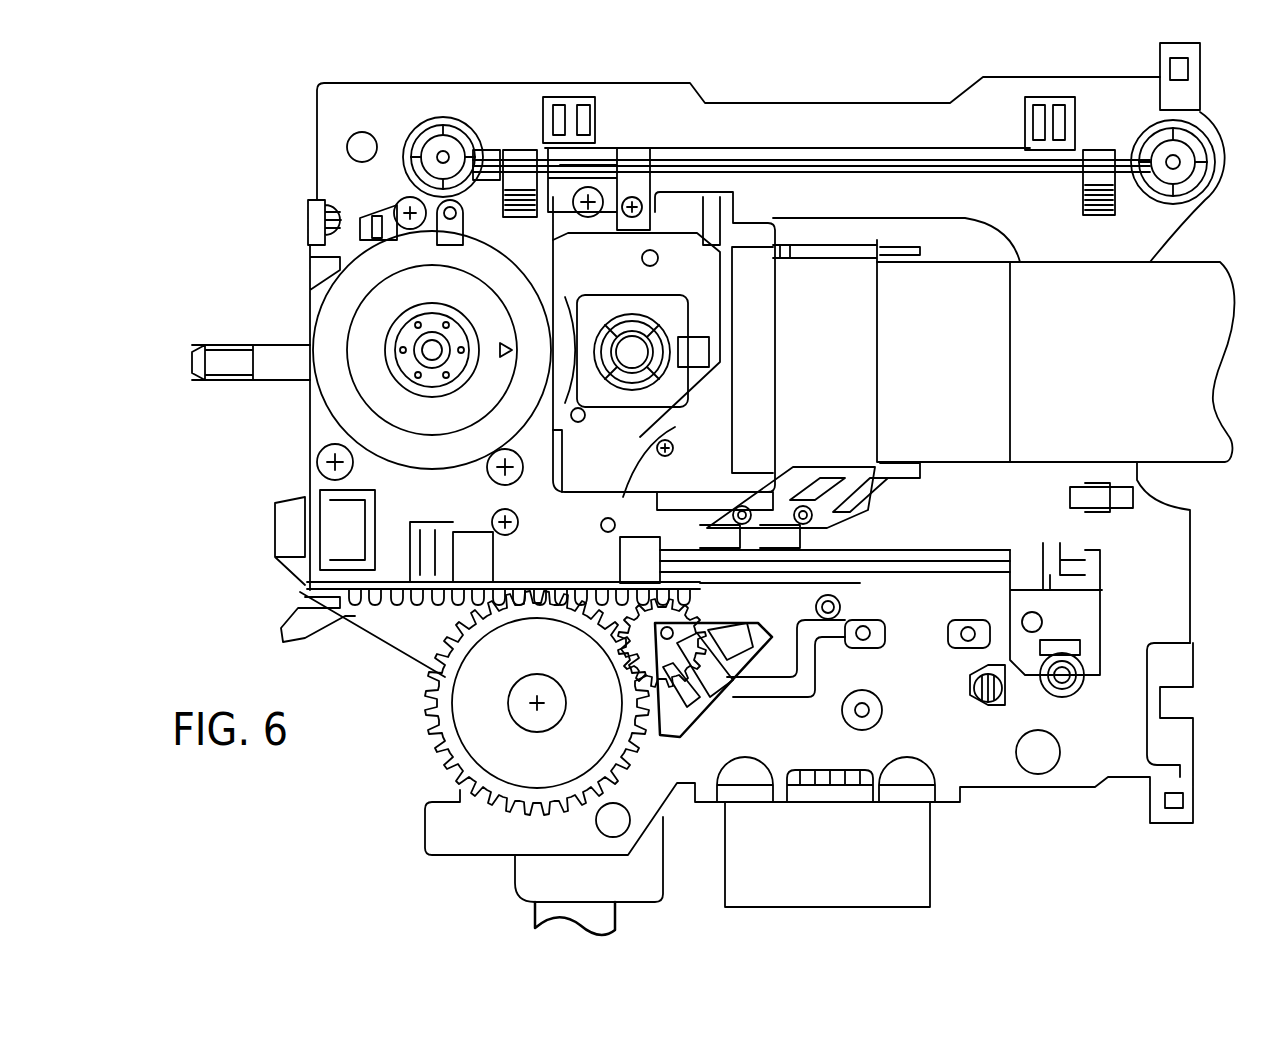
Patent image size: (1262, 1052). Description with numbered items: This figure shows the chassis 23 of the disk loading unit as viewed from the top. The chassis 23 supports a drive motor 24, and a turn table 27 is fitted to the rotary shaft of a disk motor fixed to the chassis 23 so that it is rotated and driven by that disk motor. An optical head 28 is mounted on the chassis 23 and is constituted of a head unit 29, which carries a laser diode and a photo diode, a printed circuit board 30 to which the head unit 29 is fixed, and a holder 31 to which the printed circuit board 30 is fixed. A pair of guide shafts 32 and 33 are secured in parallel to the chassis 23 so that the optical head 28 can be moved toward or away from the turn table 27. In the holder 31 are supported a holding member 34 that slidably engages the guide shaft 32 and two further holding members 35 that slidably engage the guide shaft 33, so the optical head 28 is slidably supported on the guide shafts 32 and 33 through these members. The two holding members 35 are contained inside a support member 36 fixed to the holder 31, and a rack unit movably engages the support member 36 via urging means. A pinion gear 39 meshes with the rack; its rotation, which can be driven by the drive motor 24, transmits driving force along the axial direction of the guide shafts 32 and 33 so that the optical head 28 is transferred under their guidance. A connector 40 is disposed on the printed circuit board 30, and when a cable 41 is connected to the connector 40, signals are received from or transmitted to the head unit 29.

The chassis 23 is at (345, 102).
The drive motor 24 is at (920, 880).
The turn table 27 is at (340, 316).
The optical head 28 is at (725, 308).
The head unit 29 is at (710, 383).
The printed circuit board 30 is at (718, 413).
The holder 31 is at (730, 425).
The guide shaft 32 is at (817, 160).
The guide shaft 33 is at (915, 560).
The holding member 34 is at (630, 190).
The holding members 35 is at (465, 567).
The support member 36 is at (540, 530).
The pinion gear 39 is at (707, 605).
The connector 40 is at (760, 272).
The cable 41 is at (1208, 443).